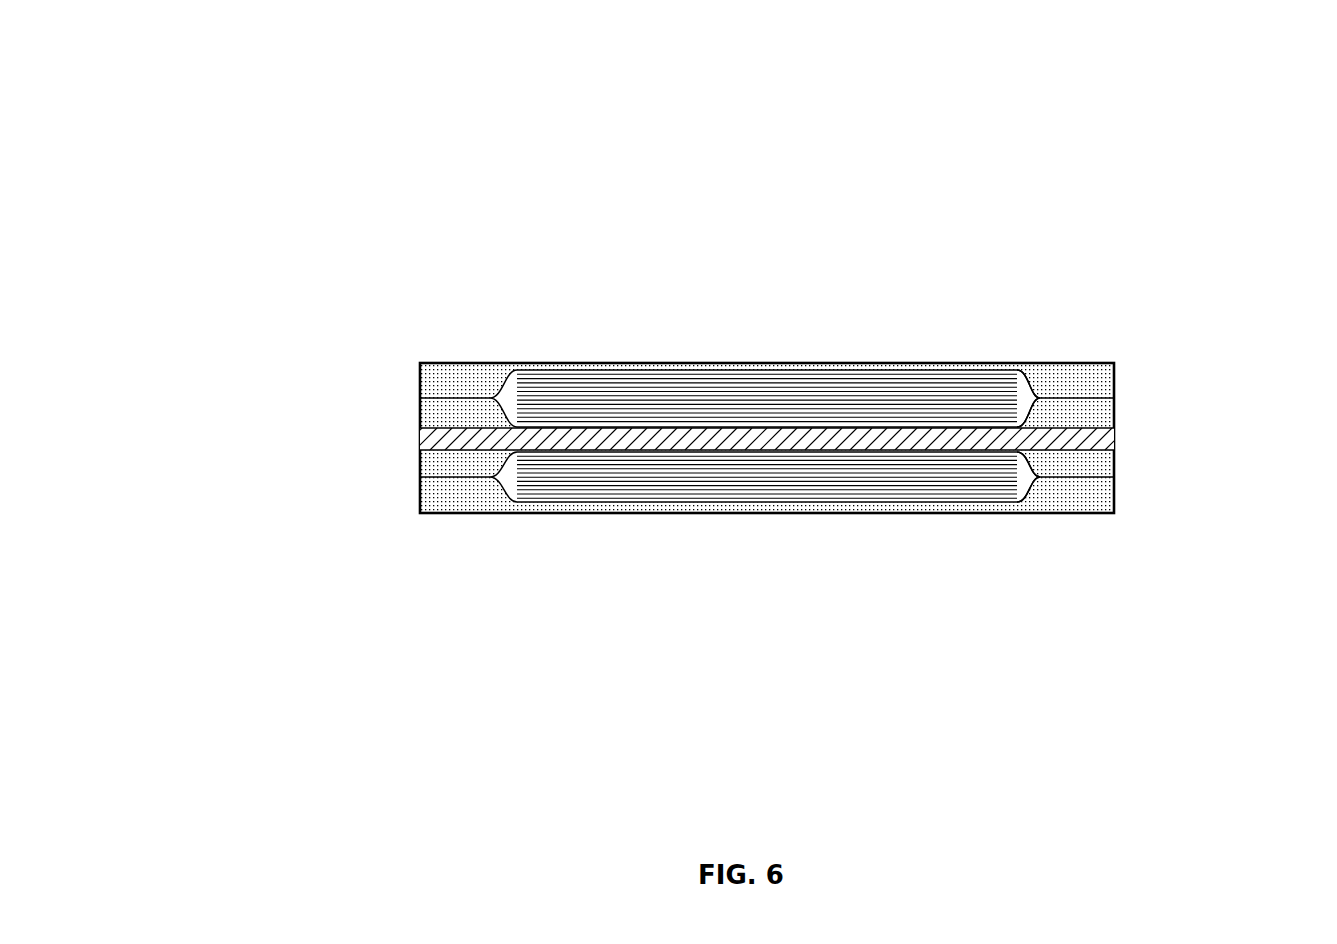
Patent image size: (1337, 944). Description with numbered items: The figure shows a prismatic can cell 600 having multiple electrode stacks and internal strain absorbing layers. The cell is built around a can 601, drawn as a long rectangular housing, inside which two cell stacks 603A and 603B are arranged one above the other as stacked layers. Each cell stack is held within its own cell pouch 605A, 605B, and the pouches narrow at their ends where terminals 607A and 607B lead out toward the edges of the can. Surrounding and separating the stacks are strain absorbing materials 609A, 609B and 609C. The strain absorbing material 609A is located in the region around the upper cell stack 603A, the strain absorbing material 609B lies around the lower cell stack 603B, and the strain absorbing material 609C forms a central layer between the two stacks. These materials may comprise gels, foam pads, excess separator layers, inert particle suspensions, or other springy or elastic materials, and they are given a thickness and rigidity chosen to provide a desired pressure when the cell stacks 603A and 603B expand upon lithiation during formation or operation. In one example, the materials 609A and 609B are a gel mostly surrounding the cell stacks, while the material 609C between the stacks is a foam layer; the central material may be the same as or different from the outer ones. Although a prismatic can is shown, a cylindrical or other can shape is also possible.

The prismatic can cell 600 is at (351, 100).
The can 601 is at (465, 363).
The cell stack 603A is at (815, 395).
The cell stack 603B is at (822, 475).
The cell pouch 605A is at (1042, 392).
The cell pouch 605B is at (1037, 485).
The terminal 607A is at (427, 405).
The terminal 607B is at (433, 473).
The strain absorbing material 609A is at (433, 377).
The strain absorbing material 609B is at (440, 500).
The strain absorbing material 609C is at (1115, 438).